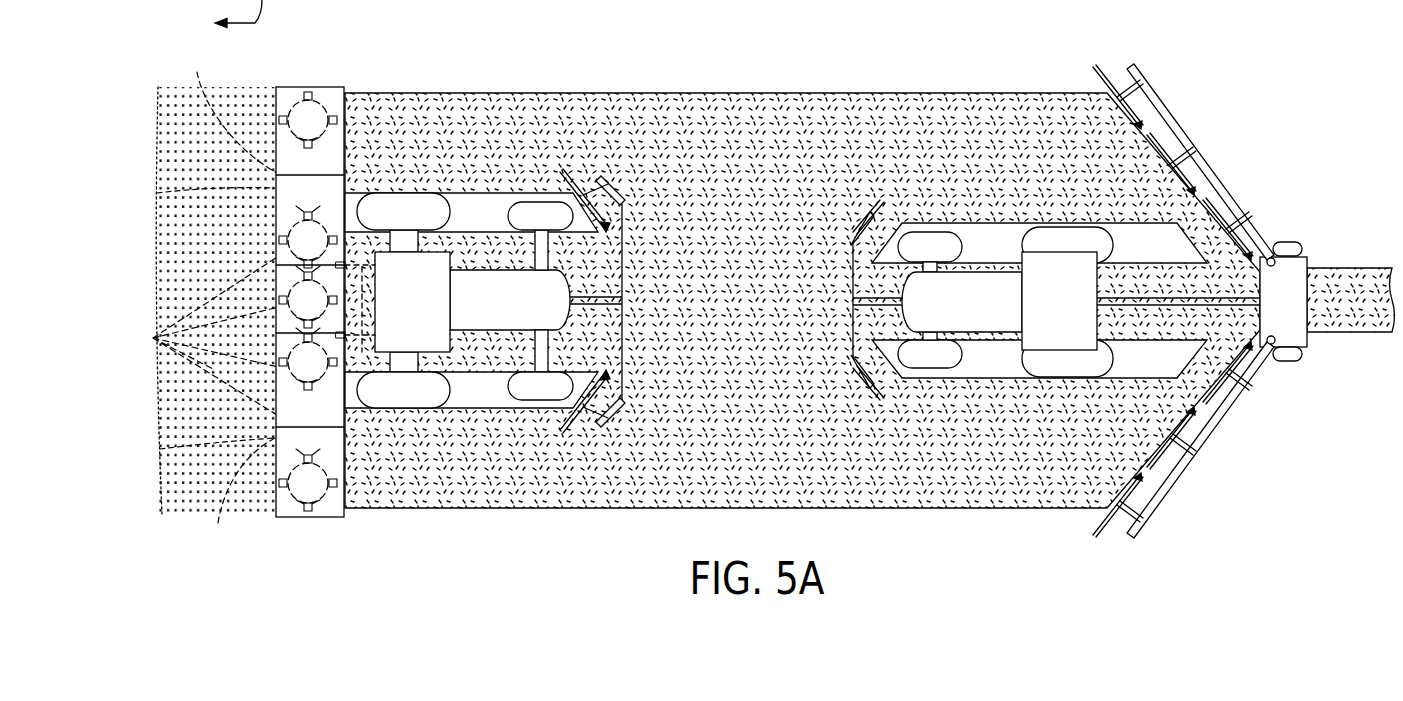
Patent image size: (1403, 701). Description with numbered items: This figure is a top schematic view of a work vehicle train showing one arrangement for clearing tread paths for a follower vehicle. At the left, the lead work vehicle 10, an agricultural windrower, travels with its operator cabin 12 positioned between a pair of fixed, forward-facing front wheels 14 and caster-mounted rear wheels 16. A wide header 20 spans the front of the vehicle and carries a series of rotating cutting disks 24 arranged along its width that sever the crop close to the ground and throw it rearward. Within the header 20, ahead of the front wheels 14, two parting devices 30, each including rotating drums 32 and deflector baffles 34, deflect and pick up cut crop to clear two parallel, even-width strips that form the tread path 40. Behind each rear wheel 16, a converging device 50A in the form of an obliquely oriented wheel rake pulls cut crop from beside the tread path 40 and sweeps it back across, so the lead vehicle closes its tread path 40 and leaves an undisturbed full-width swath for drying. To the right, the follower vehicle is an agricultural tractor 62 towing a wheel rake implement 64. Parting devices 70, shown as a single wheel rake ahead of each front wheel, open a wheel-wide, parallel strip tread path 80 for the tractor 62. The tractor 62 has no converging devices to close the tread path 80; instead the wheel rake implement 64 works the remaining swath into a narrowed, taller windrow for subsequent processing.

The work vehicle 10 is at (482, 302).
The operator cabin 12 is at (400, 320).
The front wheels 14 is at (404, 212).
The rear wheels 16 is at (545, 213).
The header 20 is at (288, 96).
The cutting disks 24 is at (153, 338).
The parting devices 30 is at (158, 194).
The rotating drums 32 is at (355, 307).
The deflector baffles 34 is at (260, 302).
The tread path 40 is at (487, 215).
The converging device 50A is at (582, 190).
The agricultural tractor 62 is at (975, 302).
The wheel rake implement 64 is at (1208, 190).
The parting devices 70 is at (906, 215).
The tread path 80 is at (1142, 240).